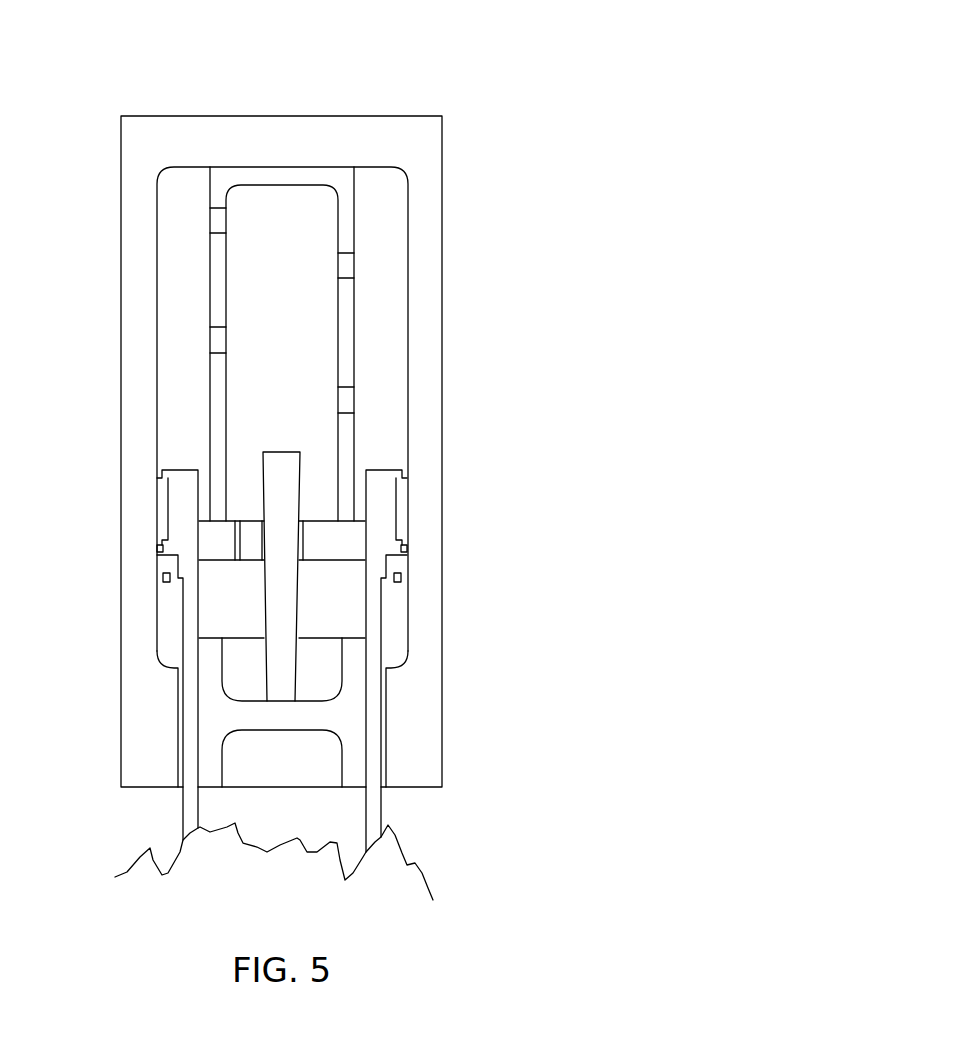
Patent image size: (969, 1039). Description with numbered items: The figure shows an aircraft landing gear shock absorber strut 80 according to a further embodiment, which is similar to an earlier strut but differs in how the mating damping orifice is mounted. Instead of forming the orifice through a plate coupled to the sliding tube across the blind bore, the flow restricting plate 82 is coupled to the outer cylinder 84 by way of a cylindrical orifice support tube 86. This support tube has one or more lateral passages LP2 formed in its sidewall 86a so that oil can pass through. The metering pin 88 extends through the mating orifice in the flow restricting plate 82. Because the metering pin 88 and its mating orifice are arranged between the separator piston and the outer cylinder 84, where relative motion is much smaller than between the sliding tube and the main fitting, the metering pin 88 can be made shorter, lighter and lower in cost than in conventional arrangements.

The aircraft landing gear shock absorber strut 80 is at (548, 90).
The flow restricting plate 82 is at (333, 545).
The outer cylinder 84 is at (431, 282).
The cylindrical orifice support tube 86 is at (264, 202).
The sidewall 86a is at (217, 302).
The metering pin 88 is at (277, 622).
The lateral passages LP2 is at (345, 402).